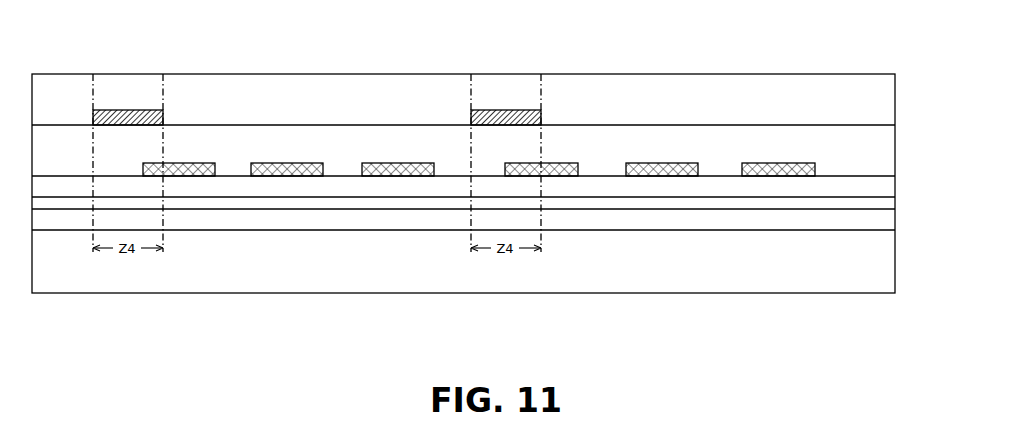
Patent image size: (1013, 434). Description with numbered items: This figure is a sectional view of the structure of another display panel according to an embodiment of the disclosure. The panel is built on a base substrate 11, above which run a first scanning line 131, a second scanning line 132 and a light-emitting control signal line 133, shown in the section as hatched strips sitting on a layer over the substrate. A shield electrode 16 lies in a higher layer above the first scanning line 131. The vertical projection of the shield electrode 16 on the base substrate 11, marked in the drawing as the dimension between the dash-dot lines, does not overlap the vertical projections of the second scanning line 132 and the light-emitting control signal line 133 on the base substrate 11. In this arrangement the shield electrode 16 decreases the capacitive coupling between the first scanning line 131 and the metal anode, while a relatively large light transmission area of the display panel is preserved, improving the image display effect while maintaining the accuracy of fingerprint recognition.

The base substrate 11 is at (895, 265).
The shield electrode 16 is at (121, 110).
The first scanning line 131 is at (180, 163).
The second scanning line 132 is at (287, 163).
The light-emitting control signal line 133 is at (393, 163).